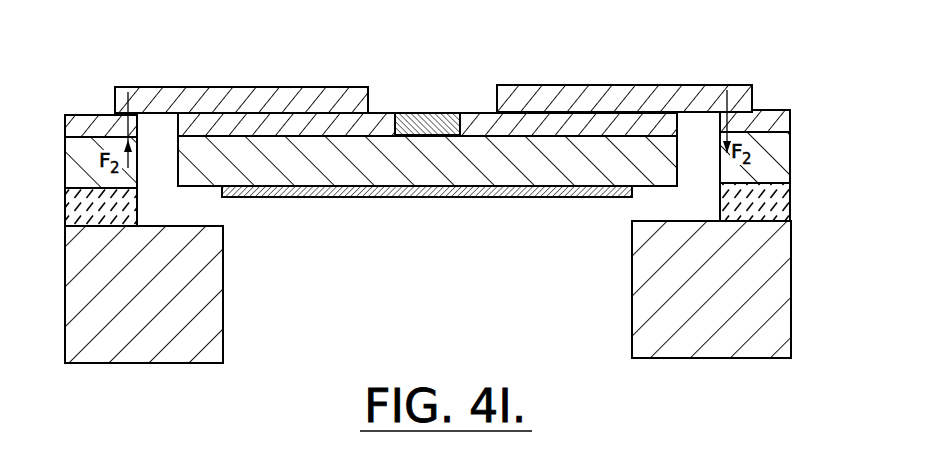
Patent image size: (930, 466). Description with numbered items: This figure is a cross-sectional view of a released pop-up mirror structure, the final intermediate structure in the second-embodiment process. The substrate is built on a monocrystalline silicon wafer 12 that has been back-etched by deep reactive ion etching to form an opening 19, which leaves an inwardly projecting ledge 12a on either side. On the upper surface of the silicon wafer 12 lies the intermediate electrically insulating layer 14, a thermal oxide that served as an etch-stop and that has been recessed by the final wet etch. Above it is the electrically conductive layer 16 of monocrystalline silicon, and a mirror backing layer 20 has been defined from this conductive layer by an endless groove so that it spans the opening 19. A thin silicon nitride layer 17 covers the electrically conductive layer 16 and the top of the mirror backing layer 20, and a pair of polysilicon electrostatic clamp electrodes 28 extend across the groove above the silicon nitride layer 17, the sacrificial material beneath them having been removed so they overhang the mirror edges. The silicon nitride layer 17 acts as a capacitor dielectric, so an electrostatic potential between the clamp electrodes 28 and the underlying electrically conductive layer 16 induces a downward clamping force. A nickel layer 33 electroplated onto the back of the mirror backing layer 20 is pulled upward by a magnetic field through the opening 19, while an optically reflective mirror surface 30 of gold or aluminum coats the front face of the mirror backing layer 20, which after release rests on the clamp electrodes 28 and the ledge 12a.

The monocrystalline silicon wafer 12 is at (792, 290).
The ledge 12a is at (176, 241).
The intermediate electrically insulating layer 14 is at (790, 205).
The electrically conductive layer 16 is at (790, 157).
The silicon nitride layer 17 is at (480, 112).
The opening 19 is at (308, 345).
The mirror backing layer 20 is at (434, 172).
The polysilicon electrostatic clamp electrodes 28 is at (147, 93).
The mirror surface 30 is at (476, 203).
The nickel layer 33 is at (412, 145).